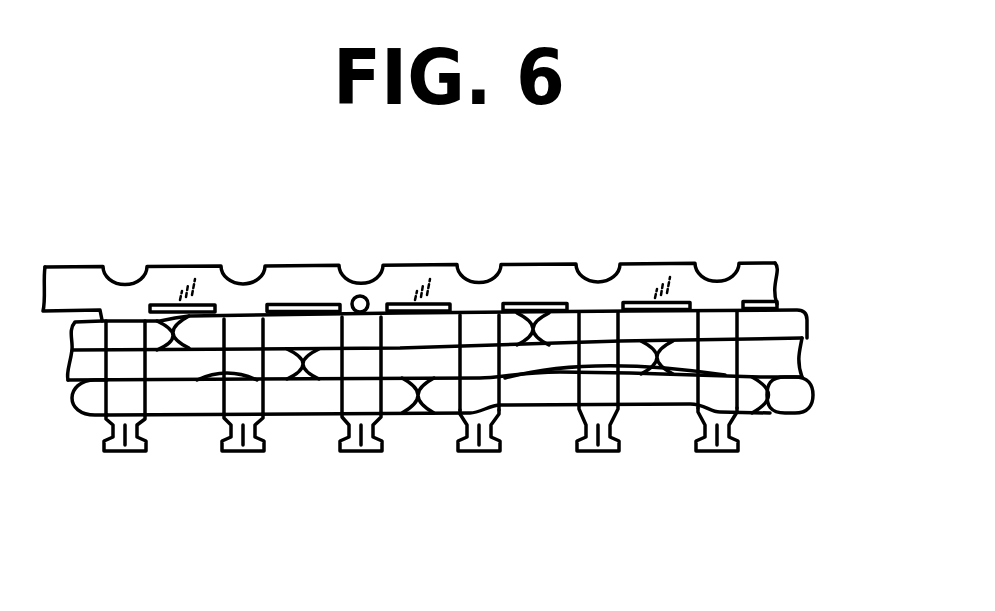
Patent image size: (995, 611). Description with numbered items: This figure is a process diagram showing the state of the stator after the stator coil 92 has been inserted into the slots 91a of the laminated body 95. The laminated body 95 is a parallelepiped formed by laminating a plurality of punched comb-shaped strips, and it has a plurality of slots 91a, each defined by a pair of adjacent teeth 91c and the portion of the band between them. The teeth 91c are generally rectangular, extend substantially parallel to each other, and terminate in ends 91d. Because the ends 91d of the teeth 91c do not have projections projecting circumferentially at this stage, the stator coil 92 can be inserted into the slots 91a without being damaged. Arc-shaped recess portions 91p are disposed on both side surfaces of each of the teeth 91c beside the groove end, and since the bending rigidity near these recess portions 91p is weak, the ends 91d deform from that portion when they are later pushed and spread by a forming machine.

The laminated body 95 is at (503, 296).
The slots 91a is at (540, 306).
The stator coil 92 is at (767, 325).
The teeth 91c is at (380, 423).
The ends of the teeth 91d is at (352, 453).
The arc-shaped recess portions 91p is at (500, 425).